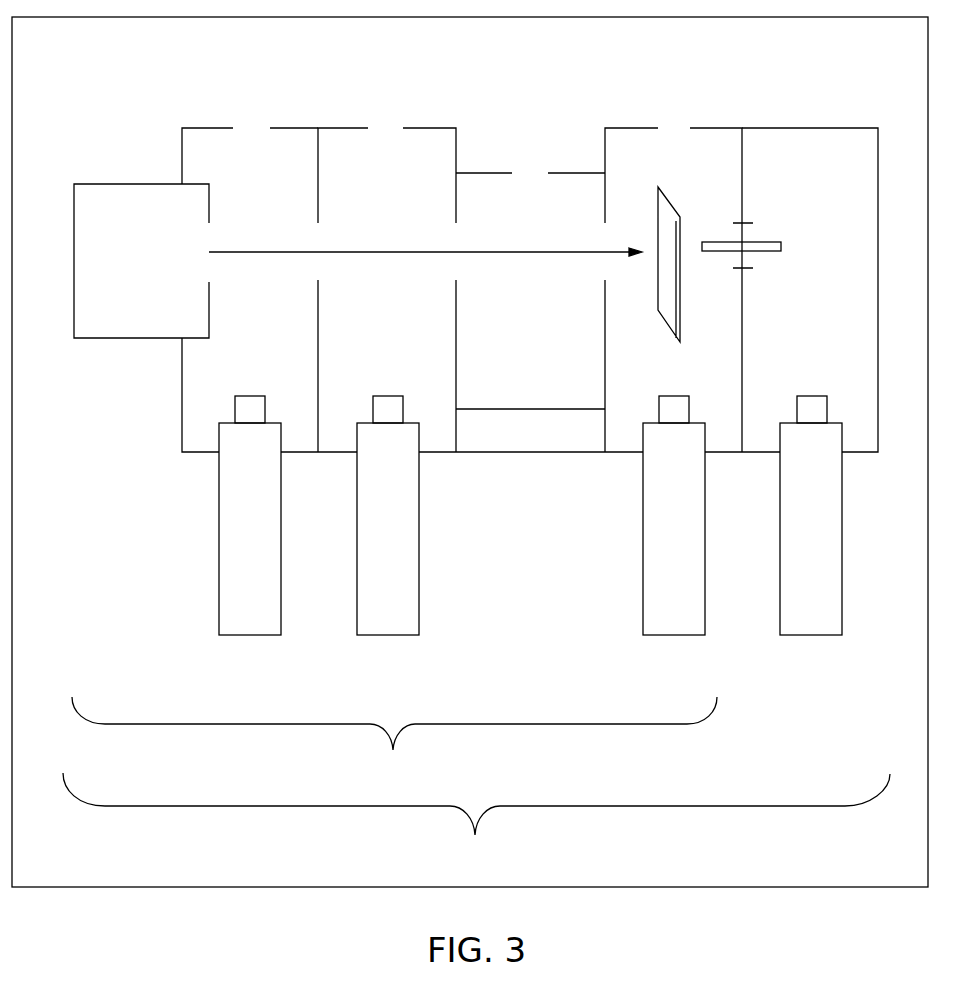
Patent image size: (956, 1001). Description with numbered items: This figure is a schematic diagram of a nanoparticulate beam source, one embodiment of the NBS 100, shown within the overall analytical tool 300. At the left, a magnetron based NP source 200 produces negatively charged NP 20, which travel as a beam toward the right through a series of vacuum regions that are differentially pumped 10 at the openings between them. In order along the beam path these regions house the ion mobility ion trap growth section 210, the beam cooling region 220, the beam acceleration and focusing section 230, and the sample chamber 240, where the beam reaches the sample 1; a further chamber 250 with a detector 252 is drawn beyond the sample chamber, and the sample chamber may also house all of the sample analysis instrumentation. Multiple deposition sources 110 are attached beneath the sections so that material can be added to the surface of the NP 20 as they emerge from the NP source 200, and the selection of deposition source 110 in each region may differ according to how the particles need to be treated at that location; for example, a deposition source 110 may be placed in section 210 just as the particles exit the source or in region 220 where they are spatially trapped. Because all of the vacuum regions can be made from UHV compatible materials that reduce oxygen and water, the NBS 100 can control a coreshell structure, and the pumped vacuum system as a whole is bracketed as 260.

The analytical tool 300 is at (470, 452).
The NP source 200 is at (140, 183).
The ion mobility ion trap growth section 210 is at (208, 125).
The beam cooling region 220 is at (343, 126).
The beam acceleration and focusing section 230 is at (490, 172).
The sample chamber 240 is at (630, 126).
The detector chamber 250 is at (815, 126).
The differential pumping 10 is at (249, 112).
The negatively charged NP 20 is at (277, 250).
The specimen 1 is at (675, 205).
The detector 252 is at (765, 240).
The deposition source 110 is at (250, 635).
The NBS 100 is at (394, 739).
The vacuum system 260 is at (476, 822).